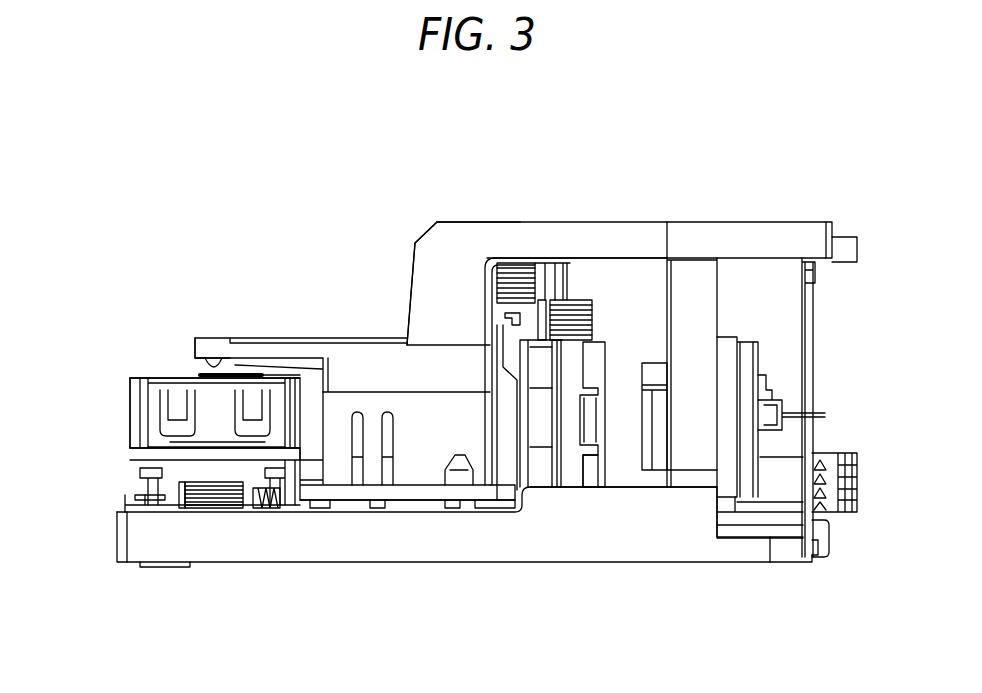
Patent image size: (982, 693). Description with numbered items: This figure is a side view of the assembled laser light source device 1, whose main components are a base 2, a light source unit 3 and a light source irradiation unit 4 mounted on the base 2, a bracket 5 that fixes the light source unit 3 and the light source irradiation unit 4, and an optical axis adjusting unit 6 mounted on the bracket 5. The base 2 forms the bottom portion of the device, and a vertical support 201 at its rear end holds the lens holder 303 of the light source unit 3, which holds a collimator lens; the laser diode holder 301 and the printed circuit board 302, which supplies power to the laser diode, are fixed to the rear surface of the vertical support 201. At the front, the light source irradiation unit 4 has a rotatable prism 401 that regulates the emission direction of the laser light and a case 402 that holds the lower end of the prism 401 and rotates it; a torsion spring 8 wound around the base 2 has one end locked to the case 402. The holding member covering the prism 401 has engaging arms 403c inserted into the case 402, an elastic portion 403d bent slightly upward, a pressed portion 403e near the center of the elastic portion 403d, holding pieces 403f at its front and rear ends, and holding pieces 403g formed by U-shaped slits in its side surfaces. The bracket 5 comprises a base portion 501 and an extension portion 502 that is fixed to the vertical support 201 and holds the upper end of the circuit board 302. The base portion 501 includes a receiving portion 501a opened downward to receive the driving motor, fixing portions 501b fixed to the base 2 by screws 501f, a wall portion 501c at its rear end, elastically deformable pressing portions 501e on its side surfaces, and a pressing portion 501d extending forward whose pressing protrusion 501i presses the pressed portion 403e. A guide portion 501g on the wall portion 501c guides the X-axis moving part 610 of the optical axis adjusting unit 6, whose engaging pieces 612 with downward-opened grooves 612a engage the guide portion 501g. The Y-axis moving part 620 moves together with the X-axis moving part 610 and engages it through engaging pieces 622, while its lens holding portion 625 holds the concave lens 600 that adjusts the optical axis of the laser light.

The laser light source device 1 is at (240, 152).
The base 2 is at (725, 565).
The light source unit 3 is at (816, 366).
The light source irradiation unit 4 is at (143, 354).
The bracket 5 is at (767, 222).
The optical axis adjusting unit 6 is at (558, 489).
The torsion spring 8 is at (212, 507).
The vertical support 201 is at (695, 270).
The laser diode holder 301 is at (762, 367).
The printed circuit board 302 is at (813, 318).
The lens holder 303 is at (652, 362).
The prism 401 is at (148, 405).
The case 402 is at (133, 462).
The engaging arms 403c is at (153, 493).
The elastic portion 403d is at (198, 372).
The pressed portion 403e is at (245, 372).
The holding pieces 403f is at (133, 385).
The holding pieces 403g is at (170, 408).
The base portion 501 is at (332, 338).
The receiving portion 501a is at (424, 472).
The fixing portions 501b is at (315, 500).
The wall portion 501c is at (503, 385).
The pressing portion 501d is at (205, 368).
The pressing portions 501e is at (372, 472).
The screws 501f is at (462, 487).
The guide portion 501g is at (503, 335).
The pressing protrusion 501i is at (220, 370).
The extension portion 502 is at (485, 222).
The concave lens 600 is at (596, 430).
The X-axis moving part 610 is at (515, 262).
The engaging pieces 612 is at (490, 290).
The grooves 612a is at (505, 320).
The Y-axis moving part 620 is at (572, 300).
The engaging pieces 622 is at (562, 262).
The lens holding portion 625 is at (600, 478).